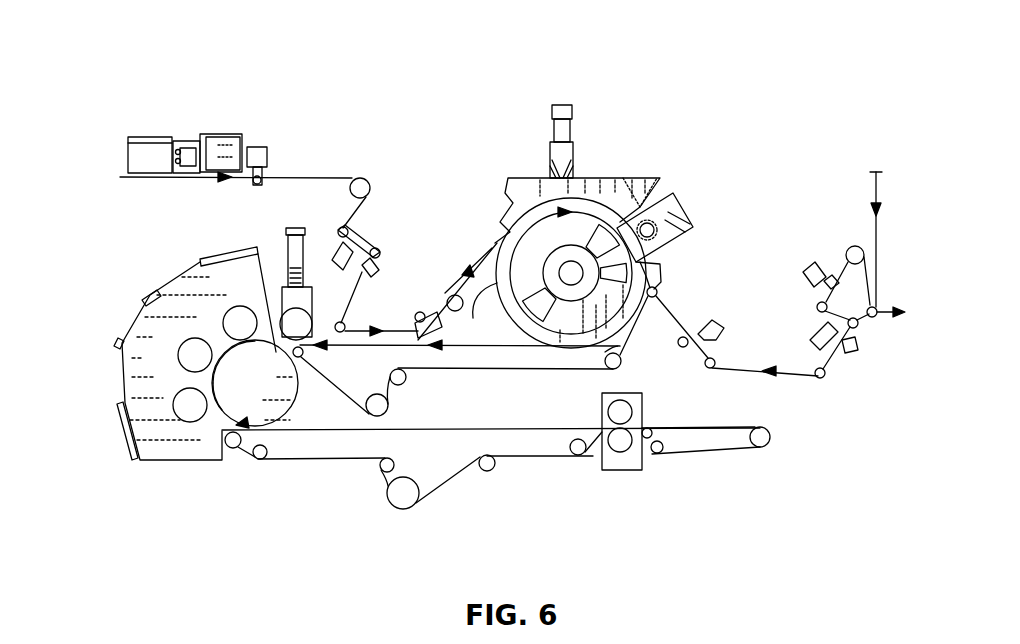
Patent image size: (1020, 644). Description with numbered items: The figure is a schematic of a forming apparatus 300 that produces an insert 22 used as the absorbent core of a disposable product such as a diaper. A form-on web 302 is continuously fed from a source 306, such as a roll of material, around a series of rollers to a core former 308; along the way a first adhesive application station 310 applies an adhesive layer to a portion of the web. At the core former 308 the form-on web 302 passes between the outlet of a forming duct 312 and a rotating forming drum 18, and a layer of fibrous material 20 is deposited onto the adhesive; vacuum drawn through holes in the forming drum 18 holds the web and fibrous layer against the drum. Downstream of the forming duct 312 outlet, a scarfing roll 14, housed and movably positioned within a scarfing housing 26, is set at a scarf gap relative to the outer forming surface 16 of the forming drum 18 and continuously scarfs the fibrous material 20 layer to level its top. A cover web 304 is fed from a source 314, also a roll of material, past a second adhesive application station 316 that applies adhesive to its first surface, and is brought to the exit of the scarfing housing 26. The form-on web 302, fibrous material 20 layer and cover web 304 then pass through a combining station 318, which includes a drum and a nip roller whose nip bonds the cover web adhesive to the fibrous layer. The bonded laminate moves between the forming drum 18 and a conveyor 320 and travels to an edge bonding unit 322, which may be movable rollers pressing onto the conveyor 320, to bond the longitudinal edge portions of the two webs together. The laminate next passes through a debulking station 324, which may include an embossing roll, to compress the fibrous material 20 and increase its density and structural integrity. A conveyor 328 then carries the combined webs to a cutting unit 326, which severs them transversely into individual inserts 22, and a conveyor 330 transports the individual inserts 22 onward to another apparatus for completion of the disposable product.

The forming apparatus 300 is at (155, 45).
The form-on web 302 is at (310, 176).
The cover web 304 is at (810, 377).
The source 306 is at (162, 136).
The core former 308 is at (605, 177).
The first adhesive application station 310 is at (425, 312).
The forming duct 312 is at (550, 173).
The source 314 is at (882, 190).
The second adhesive application station 316 is at (713, 322).
The combining station 318 is at (648, 300).
The conveyor 320 is at (453, 386).
The edge bonding unit 322 is at (283, 288).
The debulking station 324 is at (112, 375).
The cutting unit 326 is at (610, 470).
The conveyor 328 is at (494, 428).
The conveyor 330 is at (683, 452).
The scarfing roll 14 is at (661, 264).
The outer forming surface 16 is at (443, 388).
The forming drum 18 is at (585, 357).
The fibrous material 20 is at (620, 180).
The insert 22 is at (721, 433).
The scarfing housing 26 is at (680, 213).